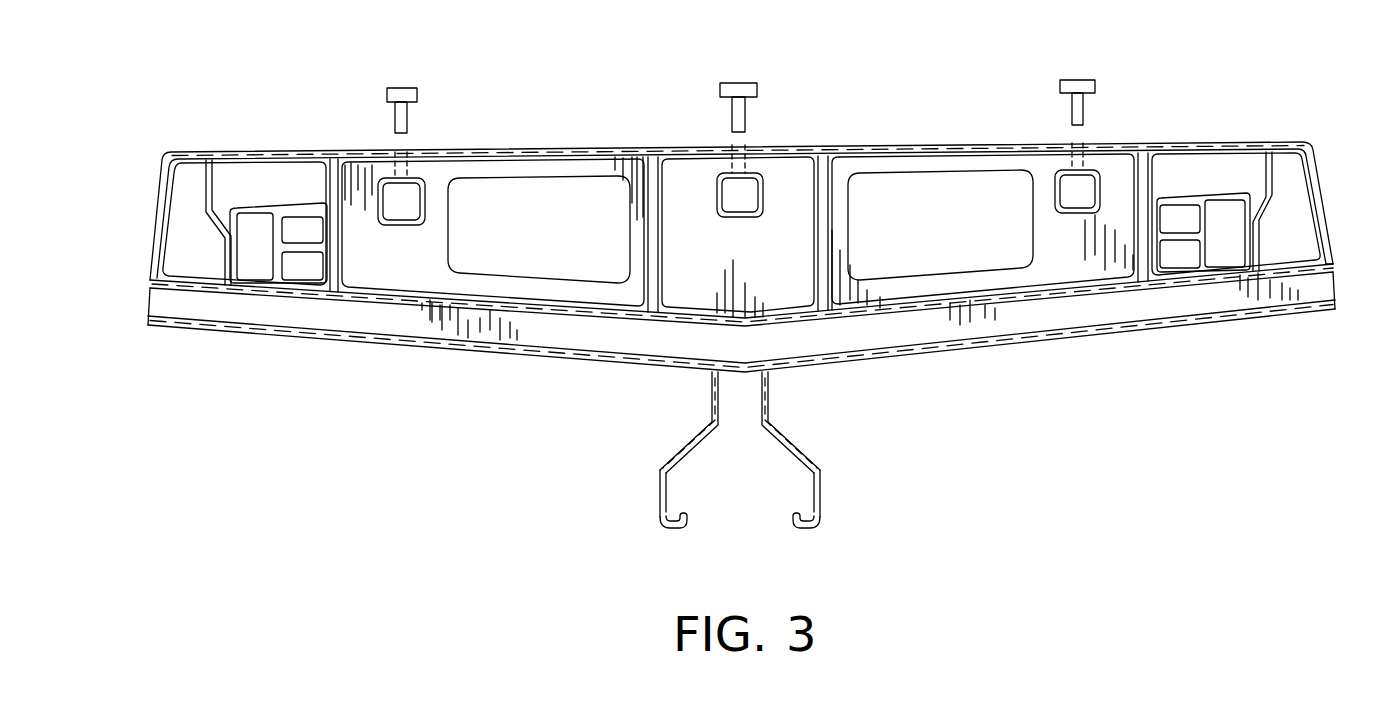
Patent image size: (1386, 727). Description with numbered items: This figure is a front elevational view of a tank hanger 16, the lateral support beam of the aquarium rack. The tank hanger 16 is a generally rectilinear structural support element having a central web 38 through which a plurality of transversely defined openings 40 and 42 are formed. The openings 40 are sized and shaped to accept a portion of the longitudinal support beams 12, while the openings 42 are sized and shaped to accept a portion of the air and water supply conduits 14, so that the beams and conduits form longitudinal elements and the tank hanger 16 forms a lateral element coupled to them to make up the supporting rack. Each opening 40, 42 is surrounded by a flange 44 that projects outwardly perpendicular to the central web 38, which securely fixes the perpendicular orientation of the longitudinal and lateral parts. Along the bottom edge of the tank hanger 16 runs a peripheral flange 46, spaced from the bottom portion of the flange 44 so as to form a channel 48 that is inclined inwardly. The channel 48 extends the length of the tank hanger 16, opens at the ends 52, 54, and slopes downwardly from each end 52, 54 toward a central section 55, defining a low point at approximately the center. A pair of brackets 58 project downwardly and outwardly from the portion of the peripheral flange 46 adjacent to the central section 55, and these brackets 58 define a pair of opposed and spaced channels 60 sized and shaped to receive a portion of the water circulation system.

The longitudinal support beam 12 is at (410, 195).
The air and water supply conduit 14 is at (242, 278).
The tank hanger 16 is at (975, 118).
The central web 38 is at (908, 167).
The transversely defined opening 40 is at (744, 242).
The transversely defined opening 42 is at (243, 188).
The flange 44 is at (330, 190).
The peripheral flange 46 is at (463, 347).
The channel 48 is at (155, 298).
The end 52 is at (1337, 293).
The end 54 is at (147, 313).
The central section 55 is at (729, 479).
The bracket 58 is at (670, 527).
The channel 60 is at (683, 512).